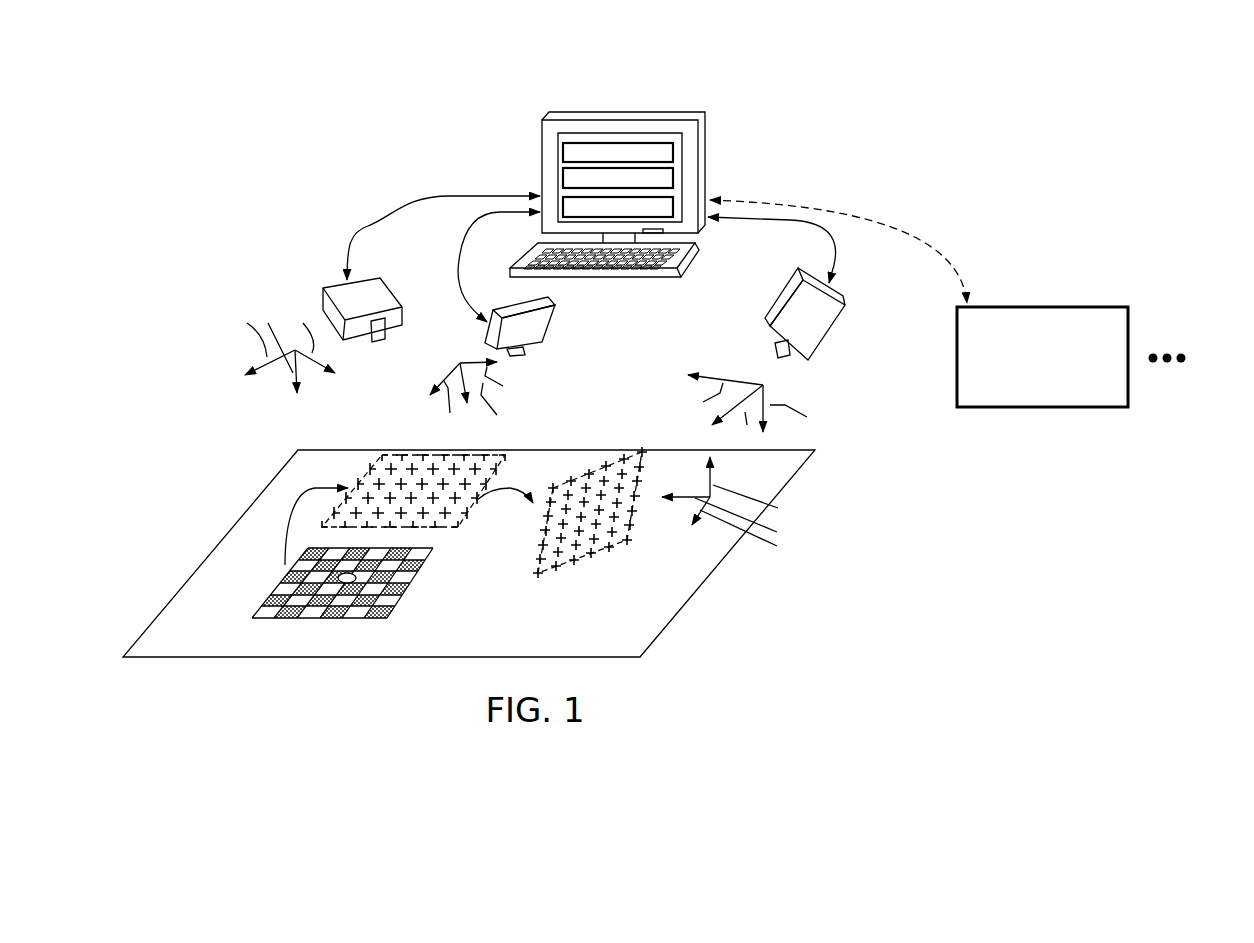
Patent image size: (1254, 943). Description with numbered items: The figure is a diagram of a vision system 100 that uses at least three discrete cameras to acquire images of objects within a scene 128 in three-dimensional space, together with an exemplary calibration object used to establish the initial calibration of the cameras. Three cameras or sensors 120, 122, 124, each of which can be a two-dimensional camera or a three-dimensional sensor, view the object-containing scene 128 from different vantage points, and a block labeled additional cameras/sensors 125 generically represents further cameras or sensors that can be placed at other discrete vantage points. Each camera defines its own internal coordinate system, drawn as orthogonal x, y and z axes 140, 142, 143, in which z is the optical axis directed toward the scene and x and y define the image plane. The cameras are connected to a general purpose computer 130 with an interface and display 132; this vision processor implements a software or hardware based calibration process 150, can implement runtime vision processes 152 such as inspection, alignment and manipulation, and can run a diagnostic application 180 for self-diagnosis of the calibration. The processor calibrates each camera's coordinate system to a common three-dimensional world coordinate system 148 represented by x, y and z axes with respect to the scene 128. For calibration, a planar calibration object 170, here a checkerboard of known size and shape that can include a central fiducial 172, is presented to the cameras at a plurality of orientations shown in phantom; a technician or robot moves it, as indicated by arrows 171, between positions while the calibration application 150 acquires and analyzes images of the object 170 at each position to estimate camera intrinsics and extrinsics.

The vision system 100 is at (925, 182).
The camera 120 is at (330, 285).
The camera 122 is at (846, 287).
The camera 124 is at (556, 328).
The additional cameras/sensors 125 is at (1050, 307).
The scene 128 is at (667, 607).
The general purpose computer 130 is at (712, 167).
The display 132 is at (675, 138).
The camera coordinate system axes 140 is at (275, 380).
The camera coordinate system axes 142 is at (796, 395).
The camera coordinate system axes 143 is at (443, 373).
The 3D world coordinate system 148 is at (728, 473).
The calibration process 150 is at (572, 143).
The runtime vision processes 152 is at (563, 177).
The planar calibration object 170 is at (594, 470).
The arrows 171 is at (316, 486).
The central fiducial 172 is at (343, 583).
The diagnostic application 180 is at (563, 200).